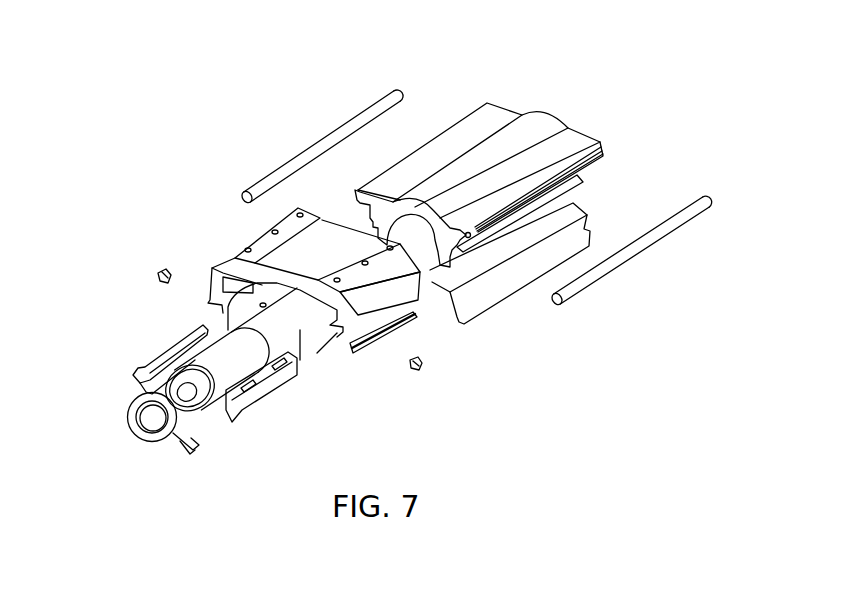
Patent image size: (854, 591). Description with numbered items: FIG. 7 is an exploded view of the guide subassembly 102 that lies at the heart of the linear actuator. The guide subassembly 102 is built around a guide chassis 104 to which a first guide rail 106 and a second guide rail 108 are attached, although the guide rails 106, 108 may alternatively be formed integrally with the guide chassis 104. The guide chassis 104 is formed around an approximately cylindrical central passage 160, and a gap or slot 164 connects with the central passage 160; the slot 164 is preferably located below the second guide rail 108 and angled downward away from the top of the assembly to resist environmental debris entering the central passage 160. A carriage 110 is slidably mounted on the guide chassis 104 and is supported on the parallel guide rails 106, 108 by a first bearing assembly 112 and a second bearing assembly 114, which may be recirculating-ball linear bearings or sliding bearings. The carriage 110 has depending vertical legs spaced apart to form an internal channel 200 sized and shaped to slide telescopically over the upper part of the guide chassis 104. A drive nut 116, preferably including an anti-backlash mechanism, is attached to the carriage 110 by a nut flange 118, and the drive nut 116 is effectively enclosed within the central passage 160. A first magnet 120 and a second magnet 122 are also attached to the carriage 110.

The guide subassembly 102 is at (499, 55).
The guide chassis 104 is at (480, 122).
The first guide rail 106 is at (318, 150).
The second guide rail 108 is at (626, 252).
The carriage 110 is at (290, 247).
The first bearing assembly 112 is at (135, 365).
The second bearing assembly 114 is at (248, 414).
The drive nut 116 is at (185, 358).
The nut flange 118 is at (152, 447).
The first magnet 120 is at (162, 268).
The second magnet 122 is at (417, 374).
The central passage 160 is at (410, 238).
The slot 164 is at (433, 272).
The internal channel 200 is at (300, 360).